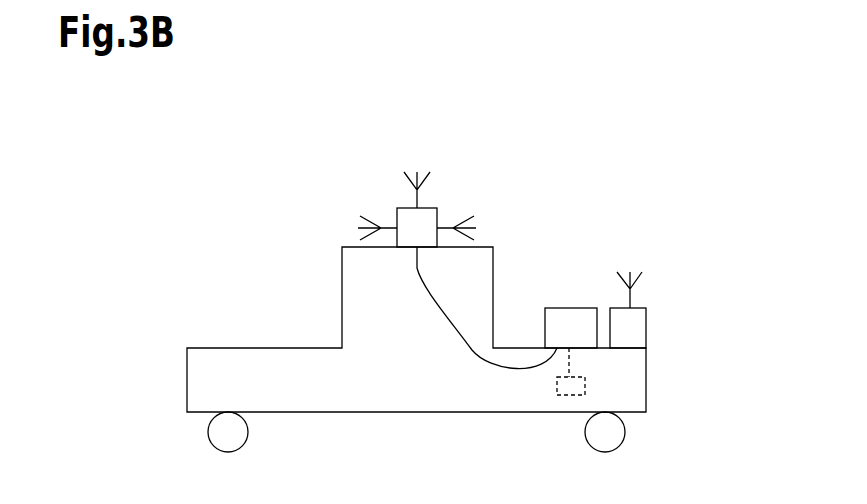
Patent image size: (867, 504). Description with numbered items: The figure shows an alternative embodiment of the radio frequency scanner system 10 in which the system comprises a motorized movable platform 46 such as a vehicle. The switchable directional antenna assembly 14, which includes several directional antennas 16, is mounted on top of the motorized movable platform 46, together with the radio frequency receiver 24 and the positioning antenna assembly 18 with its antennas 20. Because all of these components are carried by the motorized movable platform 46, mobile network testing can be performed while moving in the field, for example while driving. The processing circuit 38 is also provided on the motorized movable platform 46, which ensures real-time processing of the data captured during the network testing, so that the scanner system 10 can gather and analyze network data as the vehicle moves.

The scanner system 10 is at (252, 207).
The switchable directional antenna assembly 14 is at (483, 193).
The directional antennas 16 is at (382, 227).
The positioning antenna assembly 18 is at (648, 323).
The antennas 20 is at (637, 278).
The radio frequency receiver 24 is at (563, 308).
The processing circuit 38 is at (568, 396).
The motorized movable platform 46 is at (648, 392).